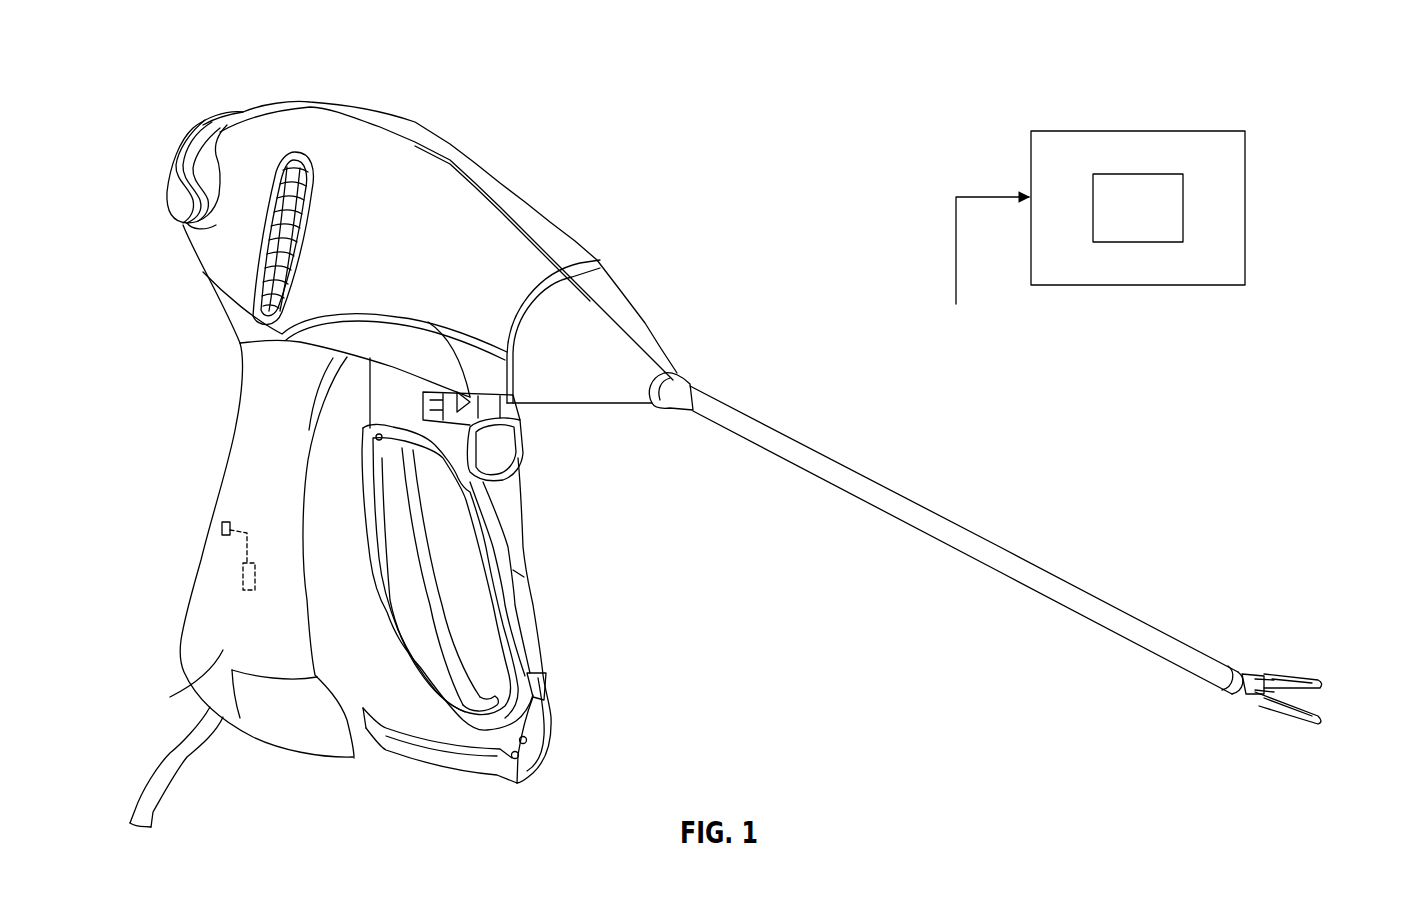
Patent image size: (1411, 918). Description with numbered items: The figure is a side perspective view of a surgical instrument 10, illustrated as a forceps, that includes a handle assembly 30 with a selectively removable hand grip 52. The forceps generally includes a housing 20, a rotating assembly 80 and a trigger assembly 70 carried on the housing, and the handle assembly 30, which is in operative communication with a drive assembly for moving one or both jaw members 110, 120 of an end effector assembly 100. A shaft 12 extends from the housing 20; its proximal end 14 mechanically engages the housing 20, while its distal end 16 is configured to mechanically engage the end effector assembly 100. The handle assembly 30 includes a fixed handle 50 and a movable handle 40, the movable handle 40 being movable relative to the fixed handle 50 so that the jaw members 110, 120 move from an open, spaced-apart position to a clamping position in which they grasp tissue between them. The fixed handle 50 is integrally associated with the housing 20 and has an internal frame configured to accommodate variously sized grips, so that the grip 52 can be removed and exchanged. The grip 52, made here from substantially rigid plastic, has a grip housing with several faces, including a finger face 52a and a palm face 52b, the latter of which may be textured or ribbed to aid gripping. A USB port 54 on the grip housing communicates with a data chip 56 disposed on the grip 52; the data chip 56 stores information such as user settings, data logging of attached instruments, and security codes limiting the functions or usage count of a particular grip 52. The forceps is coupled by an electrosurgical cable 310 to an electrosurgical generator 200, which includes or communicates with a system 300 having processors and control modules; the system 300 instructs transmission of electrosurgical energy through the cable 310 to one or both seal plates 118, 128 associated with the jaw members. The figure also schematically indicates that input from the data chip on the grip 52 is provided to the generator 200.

The surgical instrument 10 is at (758, 206).
The shaft 12 is at (1010, 554).
The proximal end 14 is at (693, 395).
The distal end 16 is at (1206, 652).
The housing 20 is at (498, 136).
The handle assembly 30 is at (546, 608).
The movable handle 40 is at (516, 576).
The fixed handle 50 is at (305, 768).
The grip 52 is at (238, 408).
The finger face 52a is at (360, 768).
The palm face 52b is at (170, 697).
The USB port 54 is at (222, 528).
The data chip 56 is at (243, 578).
The trigger assembly 70 is at (534, 468).
The rotating assembly 80 is at (292, 140).
The end effector assembly 100 is at (1291, 650).
The jaw member 110 is at (1318, 680).
The seal plate 118 is at (1314, 686).
The jaw member 120 is at (1302, 724).
The seal plate 128 is at (1320, 713).
The electrosurgical generator 200 is at (1203, 131).
The system 300 is at (1158, 220).
The electrosurgical cable 310 is at (170, 773).